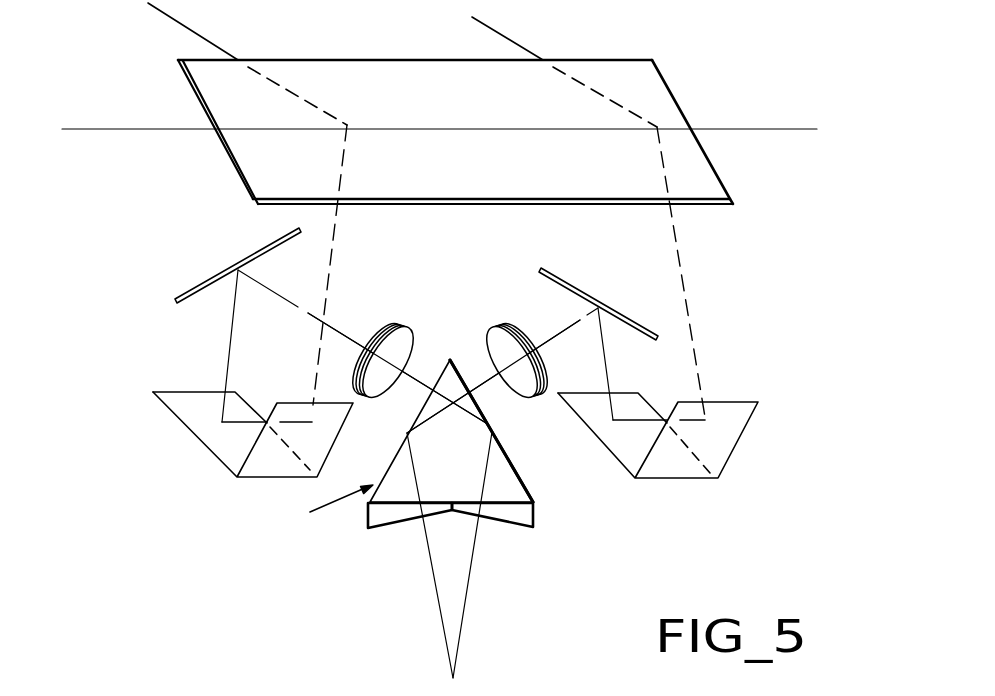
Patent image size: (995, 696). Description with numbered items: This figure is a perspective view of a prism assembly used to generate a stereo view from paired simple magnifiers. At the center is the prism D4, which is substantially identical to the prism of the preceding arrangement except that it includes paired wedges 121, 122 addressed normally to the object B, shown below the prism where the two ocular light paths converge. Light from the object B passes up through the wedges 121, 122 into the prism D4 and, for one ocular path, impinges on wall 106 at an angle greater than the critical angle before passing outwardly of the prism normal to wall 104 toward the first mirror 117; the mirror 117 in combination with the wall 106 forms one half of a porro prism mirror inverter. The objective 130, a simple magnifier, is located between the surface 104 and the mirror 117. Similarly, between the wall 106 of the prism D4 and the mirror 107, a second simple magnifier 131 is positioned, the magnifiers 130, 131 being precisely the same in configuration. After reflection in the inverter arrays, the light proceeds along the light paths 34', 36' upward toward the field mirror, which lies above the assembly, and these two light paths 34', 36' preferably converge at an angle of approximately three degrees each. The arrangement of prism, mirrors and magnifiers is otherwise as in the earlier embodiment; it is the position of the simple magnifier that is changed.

The light path 36' is at (247, 204).
The light path 34' is at (588, 214).
The first mirror 117 is at (200, 282).
The mirror 107 is at (563, 278).
The objective 130 is at (393, 322).
The second simple magnifier 131 is at (503, 322).
The wall 104 is at (442, 367).
The wall 106 is at (484, 414).
The wedge 121 is at (385, 530).
The wedge 122 is at (515, 528).
The prism D4 is at (326, 513).
The object B is at (450, 678).